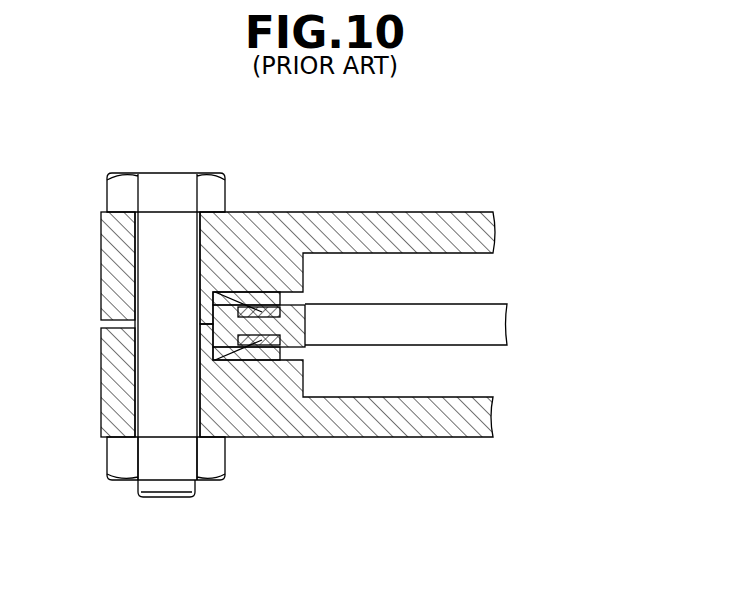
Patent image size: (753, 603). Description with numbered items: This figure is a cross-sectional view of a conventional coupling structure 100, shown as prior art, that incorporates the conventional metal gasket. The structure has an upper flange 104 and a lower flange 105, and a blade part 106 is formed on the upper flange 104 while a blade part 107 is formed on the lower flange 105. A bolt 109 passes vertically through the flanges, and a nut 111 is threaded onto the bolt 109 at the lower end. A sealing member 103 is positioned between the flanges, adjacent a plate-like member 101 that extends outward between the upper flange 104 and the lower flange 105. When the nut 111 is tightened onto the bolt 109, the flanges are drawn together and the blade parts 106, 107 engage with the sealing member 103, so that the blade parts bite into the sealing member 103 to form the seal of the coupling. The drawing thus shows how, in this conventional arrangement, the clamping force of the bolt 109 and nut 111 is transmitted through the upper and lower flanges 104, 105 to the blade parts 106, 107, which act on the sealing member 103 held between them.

The vibration-proof mounting structure 100 is at (496, 278).
The bracket 101 is at (297, 303).
The sealing member 103 is at (273, 305).
The upper flange 104 is at (408, 186).
The lower flange 105 is at (454, 452).
The blade part 106 is at (237, 305).
The blade part 107 is at (215, 360).
The bolt 109 is at (163, 168).
The nut 111 is at (105, 458).